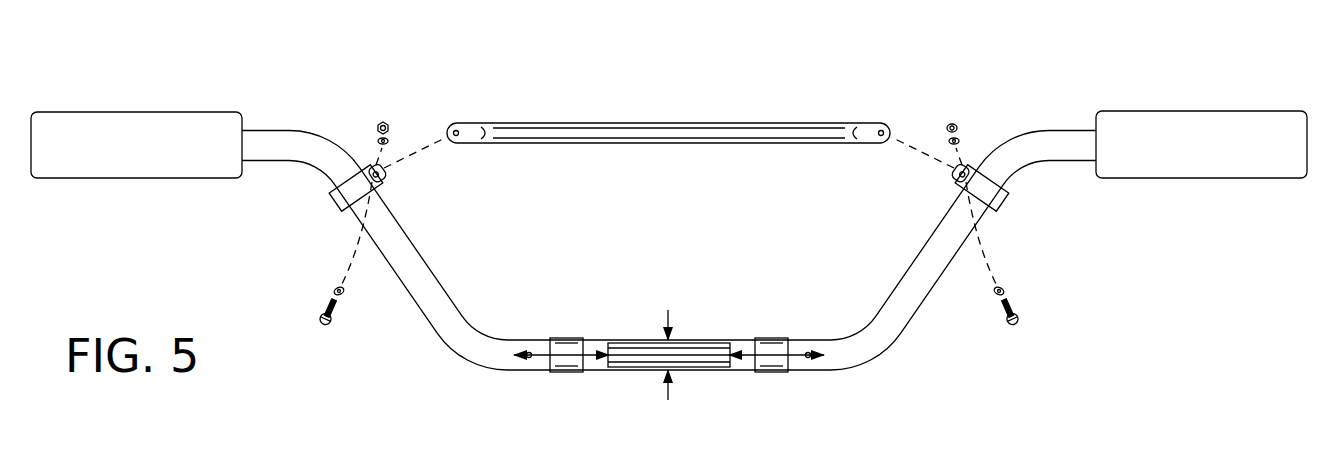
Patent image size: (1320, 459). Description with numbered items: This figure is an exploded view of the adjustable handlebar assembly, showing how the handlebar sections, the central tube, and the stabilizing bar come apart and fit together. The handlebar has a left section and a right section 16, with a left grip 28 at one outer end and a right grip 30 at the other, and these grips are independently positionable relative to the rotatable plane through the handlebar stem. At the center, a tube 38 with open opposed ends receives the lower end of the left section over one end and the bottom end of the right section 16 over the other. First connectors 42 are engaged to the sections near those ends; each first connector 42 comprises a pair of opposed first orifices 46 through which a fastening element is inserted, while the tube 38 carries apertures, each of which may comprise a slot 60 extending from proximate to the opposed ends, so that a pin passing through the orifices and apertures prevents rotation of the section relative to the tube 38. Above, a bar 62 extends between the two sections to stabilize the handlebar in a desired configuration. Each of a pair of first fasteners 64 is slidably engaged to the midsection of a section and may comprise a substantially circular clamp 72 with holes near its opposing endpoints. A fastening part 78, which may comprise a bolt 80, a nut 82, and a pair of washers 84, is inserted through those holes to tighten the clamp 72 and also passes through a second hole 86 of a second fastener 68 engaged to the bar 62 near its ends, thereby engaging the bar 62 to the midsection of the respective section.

The right section 16 is at (1022, 147).
The left grip 28 is at (75, 182).
The right grip 30 is at (1209, 182).
The tube 38 is at (690, 338).
The first connectors 42 is at (533, 349).
The first orifices 46 is at (806, 348).
The slot 60 is at (686, 373).
The bar 62 is at (670, 71).
The first fasteners 64 is at (1005, 202).
The second fasteners 68 is at (882, 122).
The clamp 72 is at (333, 198).
The fastening part 78 is at (1000, 310).
The bolt 80 is at (339, 312).
The nut 82 is at (386, 120).
The washers 84 is at (375, 130).
The second hole 86 is at (458, 124).